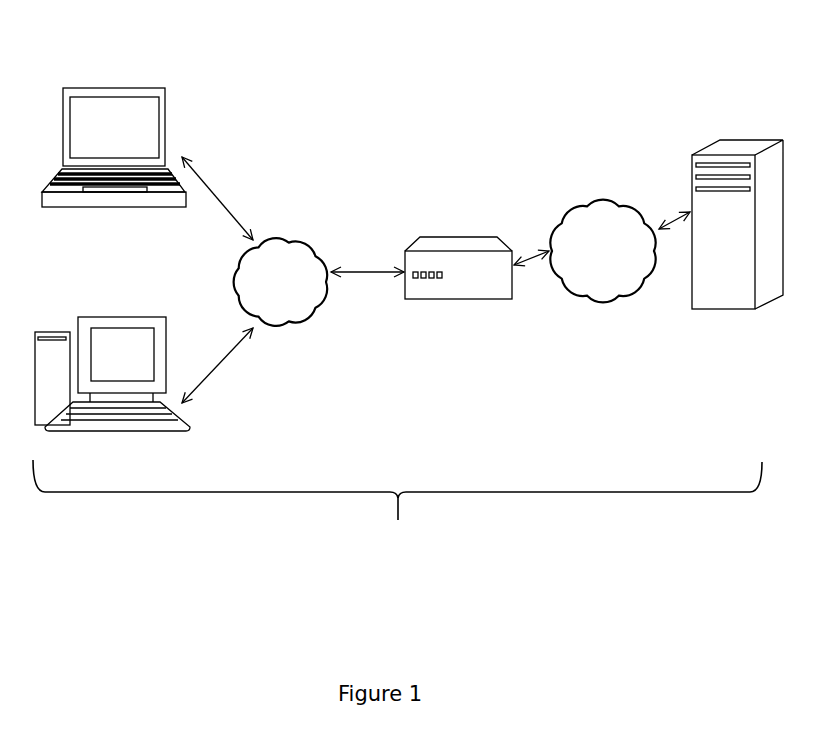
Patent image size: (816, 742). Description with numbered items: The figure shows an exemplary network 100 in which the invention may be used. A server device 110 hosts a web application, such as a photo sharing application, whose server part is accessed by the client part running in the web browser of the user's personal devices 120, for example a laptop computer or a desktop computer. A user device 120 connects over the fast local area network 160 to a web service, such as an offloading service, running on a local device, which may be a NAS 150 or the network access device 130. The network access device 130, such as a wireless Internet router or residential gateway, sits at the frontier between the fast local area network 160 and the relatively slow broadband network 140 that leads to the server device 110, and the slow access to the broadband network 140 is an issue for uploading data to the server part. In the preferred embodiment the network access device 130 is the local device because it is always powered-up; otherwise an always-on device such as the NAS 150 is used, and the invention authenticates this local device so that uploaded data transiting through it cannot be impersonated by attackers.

The network 100 is at (390, 513).
The server device 110 is at (727, 145).
The personal device 120 is at (89, 118).
The network access device 130 is at (466, 240).
The broadband network 140 is at (604, 206).
The NAS 150 is at (137, 324).
The local area network 160 is at (307, 240).